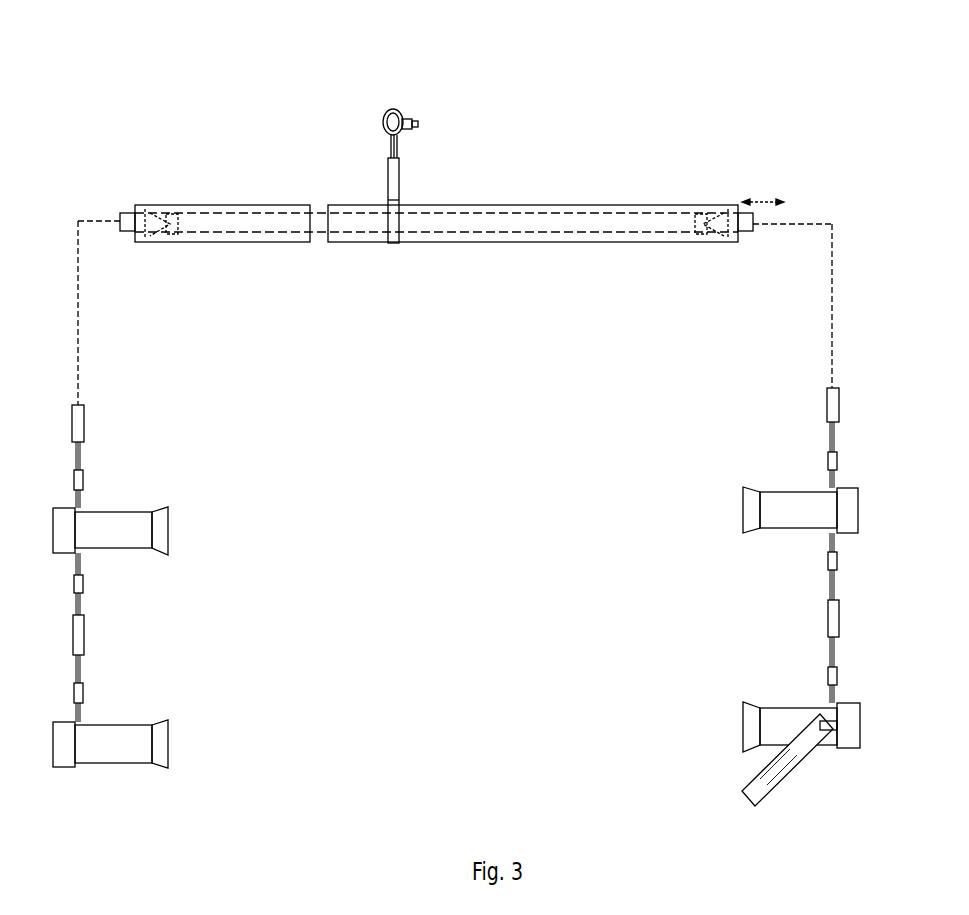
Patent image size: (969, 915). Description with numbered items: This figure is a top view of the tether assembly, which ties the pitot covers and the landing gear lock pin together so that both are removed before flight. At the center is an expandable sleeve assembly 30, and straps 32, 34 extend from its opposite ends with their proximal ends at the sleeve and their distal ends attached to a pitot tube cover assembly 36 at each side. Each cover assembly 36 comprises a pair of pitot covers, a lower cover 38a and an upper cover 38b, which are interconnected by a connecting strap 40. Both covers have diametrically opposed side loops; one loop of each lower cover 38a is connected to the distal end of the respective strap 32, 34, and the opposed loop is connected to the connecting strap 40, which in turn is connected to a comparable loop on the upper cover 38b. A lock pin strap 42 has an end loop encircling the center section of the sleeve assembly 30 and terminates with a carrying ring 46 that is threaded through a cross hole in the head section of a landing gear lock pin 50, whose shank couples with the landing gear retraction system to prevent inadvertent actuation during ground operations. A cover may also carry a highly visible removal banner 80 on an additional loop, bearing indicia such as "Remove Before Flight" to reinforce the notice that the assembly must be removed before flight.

The expandable sleeve assembly 30 is at (248, 205).
The strap 32 is at (128, 243).
The strap 34 is at (747, 232).
The pitot tube cover assembly 36 is at (212, 623).
The lower cover 38a is at (167, 543).
The upper cover 38b is at (165, 722).
The connecting strap 40 is at (248, 243).
The lock pin strap 42 is at (390, 167).
The carrying ring 46 is at (390, 112).
The landing gear lock pin 50 is at (408, 122).
The removal banner 80 is at (777, 780).